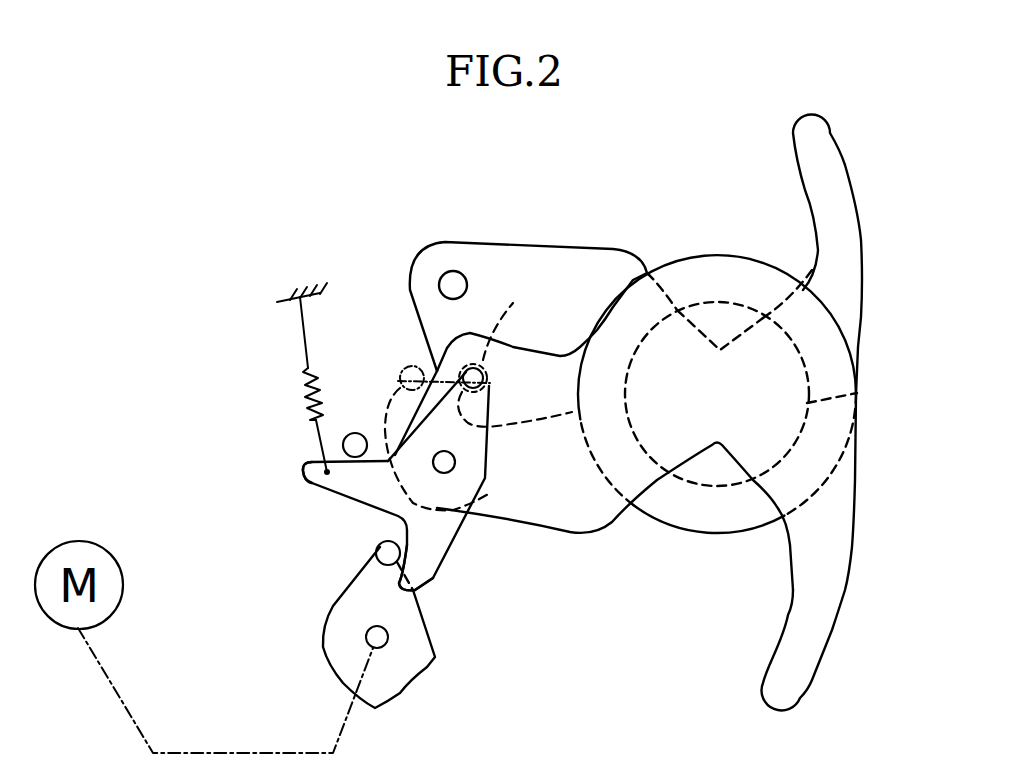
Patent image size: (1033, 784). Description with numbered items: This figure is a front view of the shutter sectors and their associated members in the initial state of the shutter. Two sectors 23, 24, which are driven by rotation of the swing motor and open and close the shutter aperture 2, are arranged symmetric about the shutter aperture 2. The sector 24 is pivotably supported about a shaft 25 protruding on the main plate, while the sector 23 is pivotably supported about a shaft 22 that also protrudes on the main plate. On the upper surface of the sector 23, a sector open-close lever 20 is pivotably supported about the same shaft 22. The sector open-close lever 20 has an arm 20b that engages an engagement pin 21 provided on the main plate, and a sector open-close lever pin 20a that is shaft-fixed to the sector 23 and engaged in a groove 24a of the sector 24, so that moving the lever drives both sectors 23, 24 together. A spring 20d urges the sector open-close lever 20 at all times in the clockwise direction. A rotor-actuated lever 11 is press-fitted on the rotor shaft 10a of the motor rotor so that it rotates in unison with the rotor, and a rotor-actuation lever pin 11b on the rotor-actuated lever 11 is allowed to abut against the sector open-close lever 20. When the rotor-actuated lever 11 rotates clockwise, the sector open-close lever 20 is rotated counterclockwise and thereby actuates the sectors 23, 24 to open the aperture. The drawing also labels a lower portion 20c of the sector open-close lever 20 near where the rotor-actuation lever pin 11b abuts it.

The shutter aperture 2 is at (857, 393).
The rotor shaft 10a is at (367, 630).
The rotor-actuated lever 11 is at (349, 667).
The rotor-actuation lever pin 11b is at (377, 546).
The sector open-close lever 20 is at (460, 550).
The sector open-close lever pin 20a is at (490, 383).
The arm 20b is at (306, 478).
The lever bottom portion 20c is at (435, 585).
The spring 20d is at (303, 370).
The engagement pin 21 is at (343, 446).
The shaft 22 is at (434, 455).
The sector 23 is at (835, 548).
The sector 24 is at (840, 181).
The groove 24a is at (478, 397).
The shaft 25 is at (451, 271).